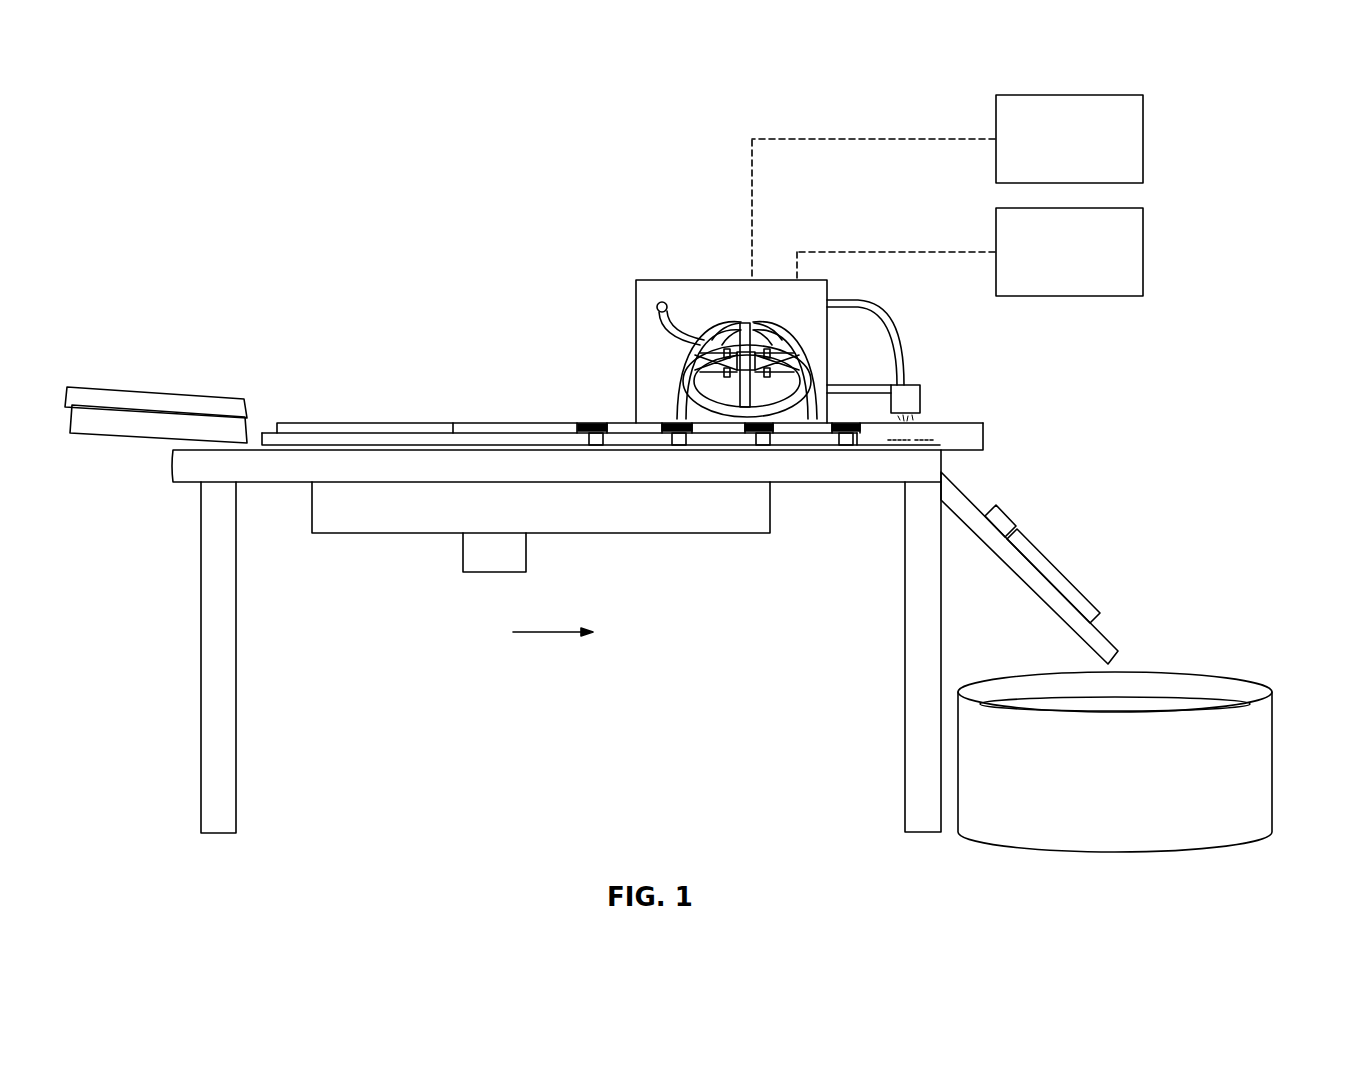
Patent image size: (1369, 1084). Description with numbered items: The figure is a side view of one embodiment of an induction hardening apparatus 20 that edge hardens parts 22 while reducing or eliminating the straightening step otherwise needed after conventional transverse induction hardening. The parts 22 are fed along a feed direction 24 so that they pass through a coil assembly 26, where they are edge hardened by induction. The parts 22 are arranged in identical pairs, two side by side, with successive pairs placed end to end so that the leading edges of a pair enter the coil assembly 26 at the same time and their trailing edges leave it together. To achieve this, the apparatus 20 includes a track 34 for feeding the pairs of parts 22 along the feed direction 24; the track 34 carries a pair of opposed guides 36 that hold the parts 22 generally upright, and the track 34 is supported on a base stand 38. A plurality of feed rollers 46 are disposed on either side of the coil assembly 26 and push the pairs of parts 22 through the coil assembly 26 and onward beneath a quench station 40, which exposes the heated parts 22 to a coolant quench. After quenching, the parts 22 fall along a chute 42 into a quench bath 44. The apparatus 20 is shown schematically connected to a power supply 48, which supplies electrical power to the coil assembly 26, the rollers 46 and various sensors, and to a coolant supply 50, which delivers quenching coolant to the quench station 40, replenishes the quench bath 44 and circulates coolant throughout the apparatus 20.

The induction hardening apparatus 20 is at (378, 218).
The parts 22 is at (105, 398).
The feed direction 24 is at (535, 635).
The coil assembly 26 is at (635, 391).
The track 34 is at (280, 464).
The opposed guides 36 is at (268, 433).
The base stand 38 is at (227, 730).
The quench station 40 is at (920, 397).
The chute 42 is at (1102, 642).
The quench bath 44 is at (1265, 770).
The feed rollers 46 is at (594, 446).
The power supply 48 is at (1143, 113).
The coolant supply 50 is at (1143, 228).